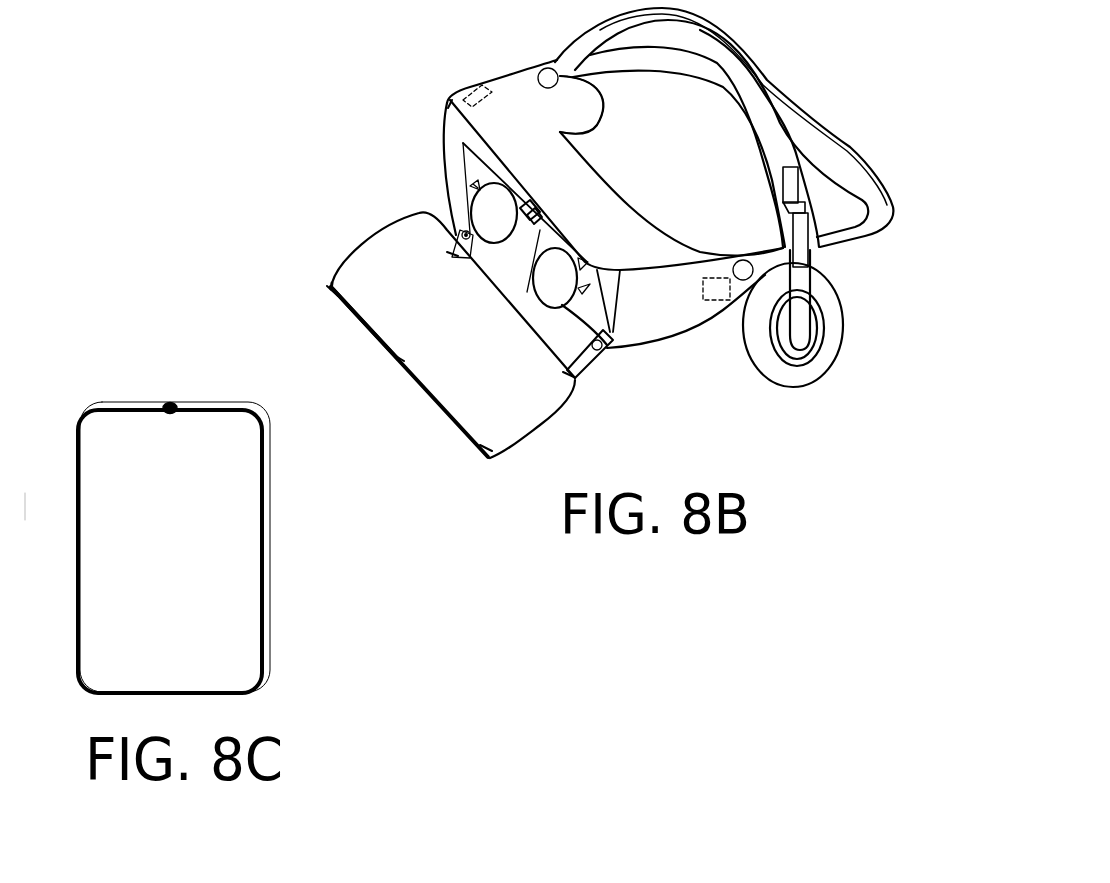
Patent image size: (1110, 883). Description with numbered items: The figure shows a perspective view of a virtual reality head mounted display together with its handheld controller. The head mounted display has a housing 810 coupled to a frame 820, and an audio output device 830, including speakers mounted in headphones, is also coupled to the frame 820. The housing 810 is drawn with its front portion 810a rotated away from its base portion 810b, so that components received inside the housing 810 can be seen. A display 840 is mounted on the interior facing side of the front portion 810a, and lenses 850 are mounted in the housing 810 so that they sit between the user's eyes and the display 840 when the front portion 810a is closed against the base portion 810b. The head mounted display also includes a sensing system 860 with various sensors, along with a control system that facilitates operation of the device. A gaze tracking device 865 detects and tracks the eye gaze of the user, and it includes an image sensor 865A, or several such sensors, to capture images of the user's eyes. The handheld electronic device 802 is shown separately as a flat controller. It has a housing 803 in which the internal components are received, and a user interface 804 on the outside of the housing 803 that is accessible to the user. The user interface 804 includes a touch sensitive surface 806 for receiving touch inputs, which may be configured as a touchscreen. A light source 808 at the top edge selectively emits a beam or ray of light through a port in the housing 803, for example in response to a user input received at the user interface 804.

In FIG. 8C, the handheld electronic device 802 is at (60, 398).
In FIG. 8C, the housing 803 is at (123, 402).
In FIG. 8C, the user interface 804 is at (83, 573).
In FIG. 8C, the touch sensitive surface 806 is at (100, 523).
In FIG. 8C, the light source 808 is at (172, 402).
In FIG. 8B, the housing 810 is at (450, 82).
In FIG. 8B, the front portion 810a is at (333, 295).
In FIG. 8B, the base portion 810b is at (482, 87).
In FIG. 8B, the frame 820 is at (853, 157).
In FIG. 8B, the audio output device 830 is at (843, 285).
In FIG. 8B, the display 840 is at (372, 258).
In FIG. 8B, the lenses 850 is at (470, 195).
In FIG. 8B, the sensing system 860 is at (448, 106).
In FIG. 8B, the gaze tracking device 865 is at (542, 210).
In FIG. 8B, the image sensor 865A is at (540, 203).